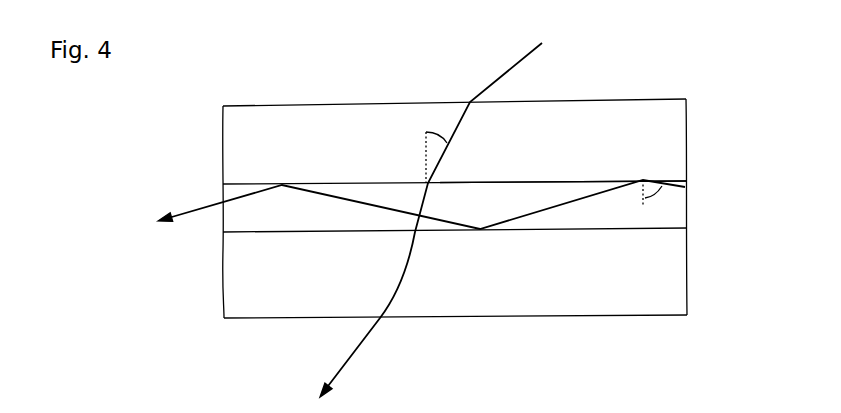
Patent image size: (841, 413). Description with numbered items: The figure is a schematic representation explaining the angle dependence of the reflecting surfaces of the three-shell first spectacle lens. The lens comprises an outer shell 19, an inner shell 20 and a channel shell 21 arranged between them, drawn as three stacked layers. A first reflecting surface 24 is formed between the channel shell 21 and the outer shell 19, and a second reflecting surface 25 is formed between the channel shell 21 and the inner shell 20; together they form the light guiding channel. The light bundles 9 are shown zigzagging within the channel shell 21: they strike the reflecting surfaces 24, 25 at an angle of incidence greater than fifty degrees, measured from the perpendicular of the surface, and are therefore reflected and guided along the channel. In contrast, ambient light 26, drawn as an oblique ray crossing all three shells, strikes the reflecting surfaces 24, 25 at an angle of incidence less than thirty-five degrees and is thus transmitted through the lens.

The outer shell 19 is at (248, 135).
The channel shell 21 is at (354, 188).
The first reflecting surface 24 is at (535, 178).
The light bundles 9 is at (588, 195).
The second reflecting surface 25 is at (585, 230).
The inner shell 20 is at (485, 287).
The ambient light 26 is at (513, 66).